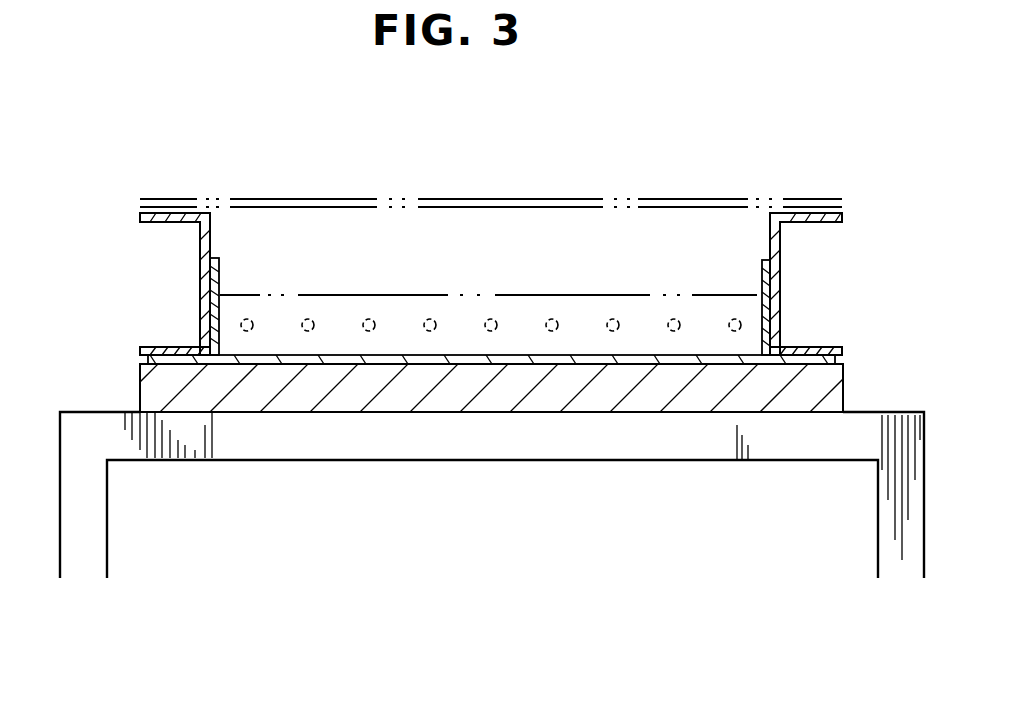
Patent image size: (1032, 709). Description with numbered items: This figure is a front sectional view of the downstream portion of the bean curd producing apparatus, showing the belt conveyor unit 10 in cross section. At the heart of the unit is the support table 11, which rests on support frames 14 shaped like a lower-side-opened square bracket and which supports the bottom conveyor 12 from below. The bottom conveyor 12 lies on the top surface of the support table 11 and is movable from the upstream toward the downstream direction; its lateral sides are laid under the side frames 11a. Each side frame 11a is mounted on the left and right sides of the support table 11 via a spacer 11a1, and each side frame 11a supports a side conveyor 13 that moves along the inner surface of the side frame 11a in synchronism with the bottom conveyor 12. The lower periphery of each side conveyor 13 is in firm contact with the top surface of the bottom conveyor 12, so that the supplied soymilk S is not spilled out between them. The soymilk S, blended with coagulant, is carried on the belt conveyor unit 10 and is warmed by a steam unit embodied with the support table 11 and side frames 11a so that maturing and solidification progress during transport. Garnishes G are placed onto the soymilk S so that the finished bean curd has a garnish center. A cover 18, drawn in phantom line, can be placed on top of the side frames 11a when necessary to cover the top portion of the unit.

The belt conveyor unit 10 is at (850, 389).
The support table 11 is at (322, 395).
The side frame 11a is at (200, 238).
The spacer 11a1 is at (173, 366).
The bottom conveyor 12 is at (463, 363).
The side conveyor 13 is at (220, 277).
The support frame 14 is at (535, 448).
The cover 18 is at (455, 198).
The soymilk S is at (547, 294).
The garnishes G is at (370, 318).